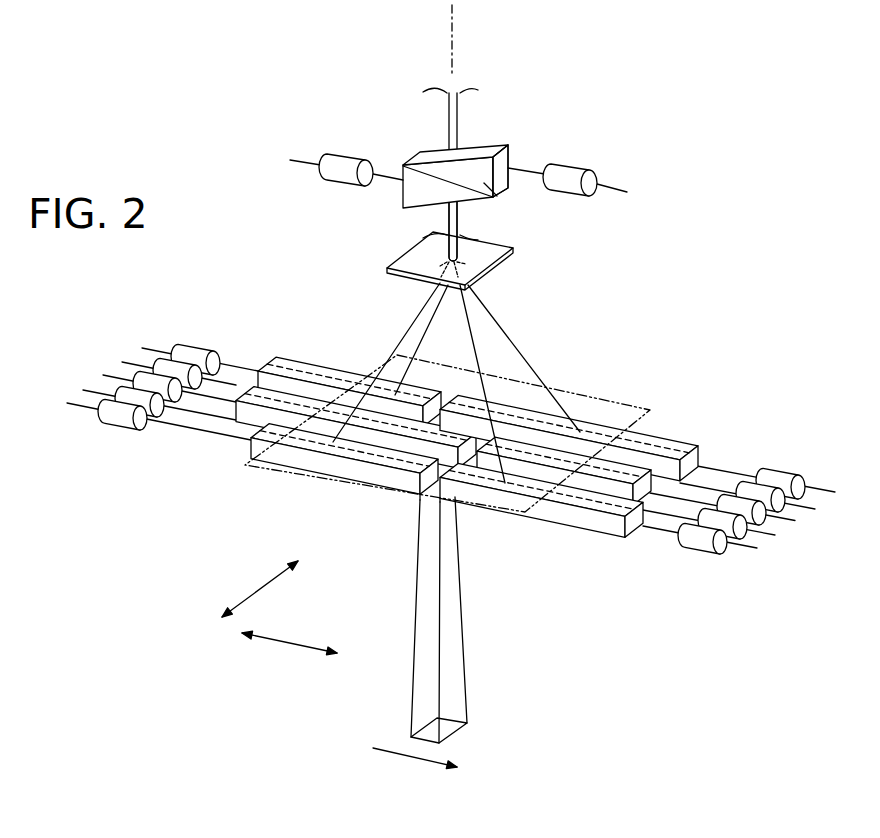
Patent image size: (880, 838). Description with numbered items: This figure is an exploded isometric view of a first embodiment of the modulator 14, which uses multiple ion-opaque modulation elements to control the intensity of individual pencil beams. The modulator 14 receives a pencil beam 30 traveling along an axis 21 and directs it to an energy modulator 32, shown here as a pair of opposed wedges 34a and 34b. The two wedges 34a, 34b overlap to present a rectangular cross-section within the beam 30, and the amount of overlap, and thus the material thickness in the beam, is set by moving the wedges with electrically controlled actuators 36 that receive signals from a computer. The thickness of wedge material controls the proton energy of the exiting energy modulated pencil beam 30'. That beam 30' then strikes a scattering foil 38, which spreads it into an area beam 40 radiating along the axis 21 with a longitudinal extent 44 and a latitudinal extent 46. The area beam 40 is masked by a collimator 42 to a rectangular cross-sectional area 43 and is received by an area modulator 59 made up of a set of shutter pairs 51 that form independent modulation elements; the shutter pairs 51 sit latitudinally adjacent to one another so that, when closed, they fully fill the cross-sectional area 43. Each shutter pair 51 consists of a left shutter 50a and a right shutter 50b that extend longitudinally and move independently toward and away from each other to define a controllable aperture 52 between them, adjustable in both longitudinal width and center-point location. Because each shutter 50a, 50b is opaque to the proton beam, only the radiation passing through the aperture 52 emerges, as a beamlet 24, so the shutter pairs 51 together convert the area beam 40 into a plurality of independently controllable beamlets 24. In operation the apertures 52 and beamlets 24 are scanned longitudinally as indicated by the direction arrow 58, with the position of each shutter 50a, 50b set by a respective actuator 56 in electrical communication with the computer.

The modulator 14 is at (635, 98).
The axis 21 is at (458, 30).
The beamlet 24 is at (462, 670).
The pencil beam 30 is at (480, 174).
The energy modulated pencil beam 30' is at (480, 238).
The energy modulator 32 is at (535, 137).
The wedge 34a is at (398, 197).
The wedge 34b is at (503, 193).
The electrically controlled actuators 36 is at (340, 157).
The scattering foil 38 is at (405, 270).
The area beam 40 is at (493, 327).
The collimator 42 is at (600, 402).
The rectangular cross-sectional area 43 is at (545, 348).
The longitudinal extent 44 is at (287, 644).
The latitudinal extent 46 is at (258, 590).
The left shutter 50a is at (372, 474).
The right shutter 50b is at (592, 532).
The shutter pairs 51 is at (224, 428).
The controllable aperture 52 is at (428, 503).
The actuator 56 is at (112, 415).
The direction arrow 58 is at (410, 757).
The area modulator 59 is at (225, 322).